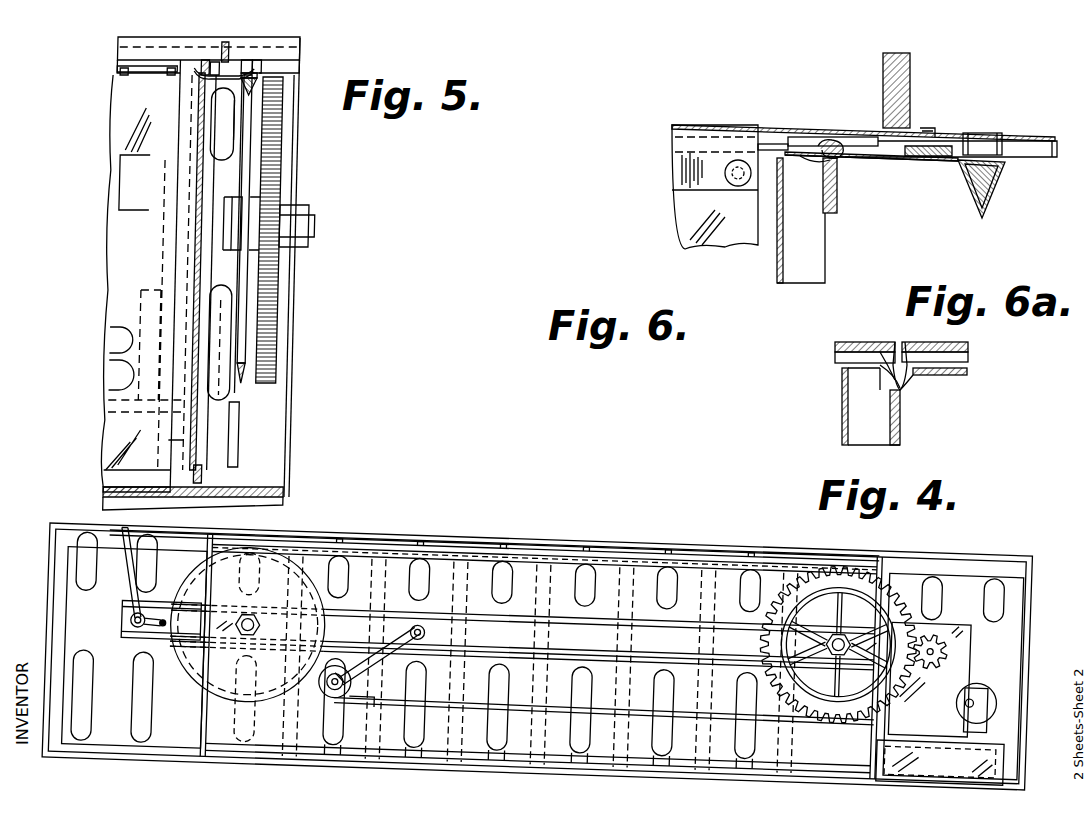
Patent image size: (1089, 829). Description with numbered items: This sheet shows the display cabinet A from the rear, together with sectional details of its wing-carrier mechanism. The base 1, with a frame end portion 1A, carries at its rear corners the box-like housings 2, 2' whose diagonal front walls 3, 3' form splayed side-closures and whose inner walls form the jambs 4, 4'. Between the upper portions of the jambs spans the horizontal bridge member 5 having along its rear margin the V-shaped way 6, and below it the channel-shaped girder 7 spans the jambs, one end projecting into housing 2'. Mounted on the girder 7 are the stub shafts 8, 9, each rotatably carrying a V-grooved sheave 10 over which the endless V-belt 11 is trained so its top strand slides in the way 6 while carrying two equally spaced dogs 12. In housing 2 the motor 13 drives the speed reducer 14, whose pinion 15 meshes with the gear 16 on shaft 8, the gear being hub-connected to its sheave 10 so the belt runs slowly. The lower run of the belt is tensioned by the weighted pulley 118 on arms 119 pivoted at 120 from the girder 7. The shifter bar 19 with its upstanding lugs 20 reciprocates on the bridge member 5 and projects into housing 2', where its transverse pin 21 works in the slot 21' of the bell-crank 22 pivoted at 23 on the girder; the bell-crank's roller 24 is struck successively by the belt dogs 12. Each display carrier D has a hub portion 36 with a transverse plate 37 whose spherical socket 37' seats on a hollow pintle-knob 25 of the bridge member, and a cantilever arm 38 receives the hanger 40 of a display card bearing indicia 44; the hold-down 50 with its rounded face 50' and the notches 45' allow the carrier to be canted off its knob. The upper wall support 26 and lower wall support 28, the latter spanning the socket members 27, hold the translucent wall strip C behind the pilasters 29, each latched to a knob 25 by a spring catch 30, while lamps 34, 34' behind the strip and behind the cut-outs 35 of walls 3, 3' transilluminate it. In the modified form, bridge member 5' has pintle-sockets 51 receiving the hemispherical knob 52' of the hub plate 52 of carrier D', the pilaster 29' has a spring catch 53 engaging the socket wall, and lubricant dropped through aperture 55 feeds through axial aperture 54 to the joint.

In FIG. 5, the base 1 is at (276, 498).
In FIG. 4, the base 1 is at (536, 669).
In FIG. 4, the frame end 1A is at (1045, 632).
In FIG. 5, the housing 2 is at (210, 267).
In FIG. 4, the housing 2 is at (1039, 612).
In FIG. 4, the housing 2' is at (39, 572).
In FIG. 5, the front wall 3 is at (192, 49).
In FIG. 4, the front wall 3 is at (1038, 588).
In FIG. 4, the front wall 3' is at (35, 533).
In FIG. 5, the jamb 4 is at (277, 282).
In FIG. 4, the jamb 4 is at (876, 653).
In FIG. 4, the jamb 4' is at (495, 532).
In FIG. 5, the bridge member 5 is at (202, 269).
In FIG. 6, the bridge member 5 is at (871, 173).
In FIG. 6A, the bridge member 5' is at (946, 381).
In FIG. 5, the way 6 is at (257, 84).
In FIG. 6, the way 6 is at (990, 203).
In FIG. 4, the way 6 is at (501, 560).
In FIG. 5, the girder 7 is at (264, 195).
In FIG. 4, the girder 7 is at (523, 626).
In FIG. 5, the stub shaft 8 is at (316, 226).
In FIG. 4, the stub shaft 8 is at (838, 644).
In FIG. 4, the stub shaft 9 is at (247, 624).
In FIG. 5, the sheave 10 is at (253, 340).
In FIG. 4, the sheave 10 is at (523, 618).
In FIG. 5, the endless V-belt 11 is at (258, 74).
In FIG. 4, the endless V-belt 11 is at (604, 695).
In FIG. 5, the dog 12 is at (262, 64).
In FIG. 4, the dog 12 is at (535, 628).
In FIG. 4, the motor 13 is at (977, 691).
In FIG. 4, the speed reducer 14 is at (938, 679).
In FIG. 4, the pinion 15 is at (941, 632).
In FIG. 5, the gear 16 is at (284, 165).
In FIG. 4, the gear 16 is at (820, 644).
In FIG. 5, the shifter bar 19 is at (222, 124).
In FIG. 4, the shifter bar 19 is at (556, 536).
In FIG. 5, the shifter lug 20 is at (253, 62).
In FIG. 4, the shifter lug 20 is at (545, 541).
In FIG. 4, the transverse pin 21 is at (121, 561).
In FIG. 4, the slot 21' is at (114, 578).
In FIG. 4, the bell-crank 22 is at (153, 635).
In FIG. 4, the pivot 23 is at (114, 624).
In FIG. 4, the roller 24 is at (160, 652).
In FIG. 5, the pintle-knob 25 is at (215, 62).
In FIG. 6, the pintle-knob 25 is at (855, 142).
In FIG. 5, the upper wall support 26 is at (203, 82).
In FIG. 6, the upper wall support 26 is at (837, 200).
In FIG. 6A, the upper wall support 26 is at (900, 430).
In FIG. 5, the socket member 27 is at (180, 480).
In FIG. 4, the socket member 27 is at (537, 775).
In FIG. 5, the lower wall support 28 is at (212, 475).
In FIG. 5, the pilaster 29 is at (158, 451).
In FIG. 4, the pilaster 29 is at (539, 664).
In FIG. 6A, the pilaster 29' is at (824, 406).
In FIG. 6, the spring catch 30 is at (828, 162).
In FIG. 5, the lamp 34 is at (192, 126).
In FIG. 4, the lamp 34 is at (561, 579).
In FIG. 5, the lamp 34' is at (266, 342).
In FIG. 4, the lamp 34' is at (565, 718).
In FIG. 4, the cut-out portion 35 is at (522, 645).
In FIG. 5, the hub portion 36 is at (204, 60).
In FIG. 6, the hub portion 36 is at (802, 137).
In FIG. 6, the transverse plate 37 is at (772, 165).
In FIG. 6, the spherical socket 37' is at (831, 132).
In FIG. 6, the cantilever arm 38 is at (712, 125).
In FIG. 5, the hanger 40 is at (150, 75).
In FIG. 5, the indicia 44 is at (123, 200).
In FIG. 6, the notch 45' is at (971, 130).
In FIG. 5, the hold-down 50 is at (243, 42).
In FIG. 6, the hold-down 50 is at (882, 90).
In FIG. 4, the hold-down 50 is at (656, 537).
In FIG. 6, the rounded lower face 50' is at (924, 110).
In FIG. 6A, the pintle-socket 51 is at (915, 385).
In FIG. 6A, the hub plate 52 is at (848, 366).
In FIG. 6A, the hemispherical knob 52' is at (873, 348).
In FIG. 6A, the spring catch 53 is at (893, 382).
In FIG. 6A, the axial aperture 54 is at (913, 345).
In FIG. 6A, the aperture 55 is at (897, 342).
In FIG. 4, the weighted pulley 118 is at (327, 699).
In FIG. 4, the arm 119 is at (380, 639).
In FIG. 4, the pivot 120 is at (461, 633).
In FIG. 5, the display cabinet A is at (114, 492).
In FIG. 5, the wall strip C is at (200, 172).
In FIG. 6A, the wall strip C is at (880, 445).
In FIG. 4, the wall strip C is at (694, 551).
In FIG. 5, the display carrier D is at (208, 45).
In FIG. 6, the display carrier D is at (777, 116).
In FIG. 6A, the display carrier D' is at (853, 332).